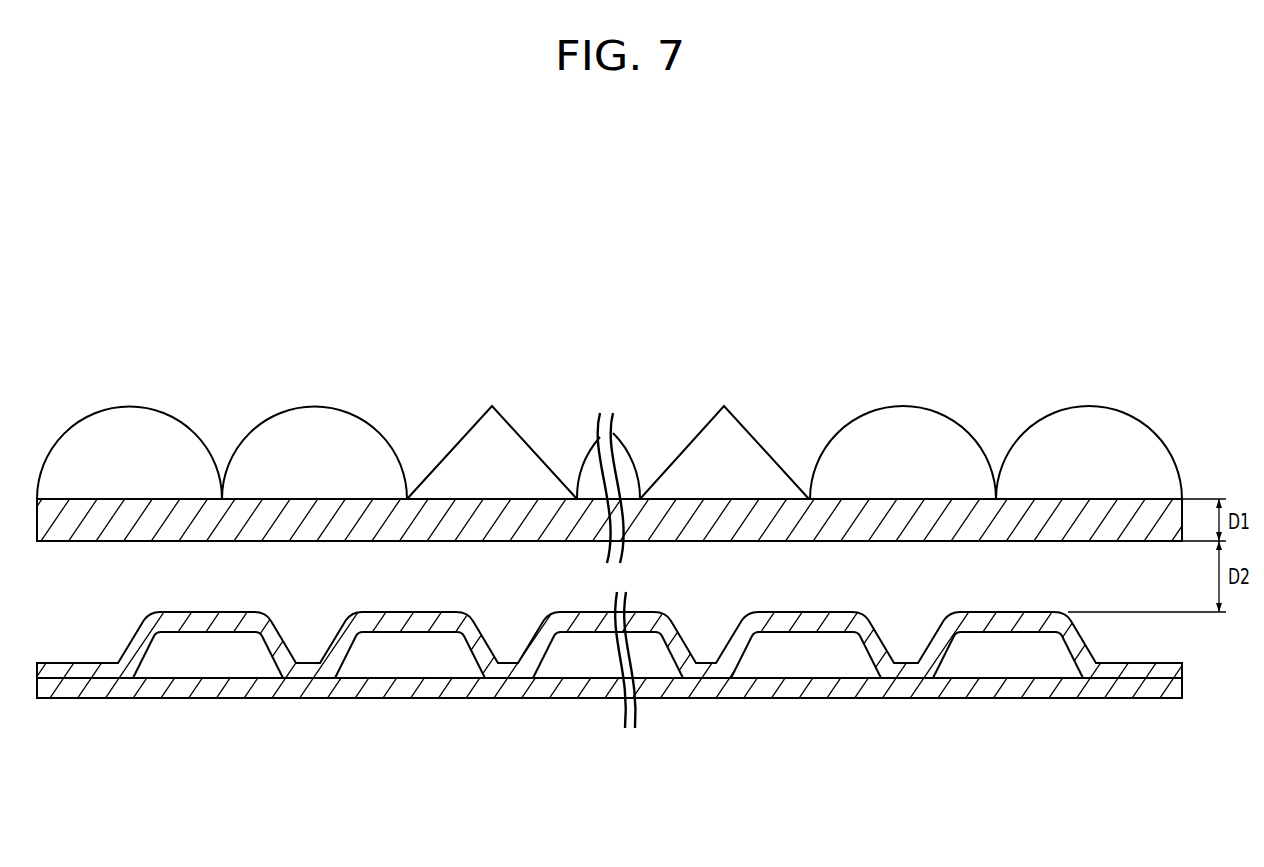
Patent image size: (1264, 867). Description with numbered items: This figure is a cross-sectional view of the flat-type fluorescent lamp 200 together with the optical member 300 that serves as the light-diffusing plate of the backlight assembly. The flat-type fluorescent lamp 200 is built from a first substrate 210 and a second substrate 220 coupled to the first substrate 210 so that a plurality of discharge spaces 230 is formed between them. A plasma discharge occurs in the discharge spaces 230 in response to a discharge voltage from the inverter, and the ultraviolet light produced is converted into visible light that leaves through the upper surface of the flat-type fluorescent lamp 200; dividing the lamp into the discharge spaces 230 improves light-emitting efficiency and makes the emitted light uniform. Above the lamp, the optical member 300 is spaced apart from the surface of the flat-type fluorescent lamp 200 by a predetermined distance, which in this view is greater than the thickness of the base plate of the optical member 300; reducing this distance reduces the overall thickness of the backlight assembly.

The optical member 300 is at (1106, 366).
The flat-type fluorescent lamp 200 is at (609, 718).
The first substrate 210 is at (900, 690).
The second substrate 220 is at (993, 623).
The discharge spaces 230 is at (1008, 780).